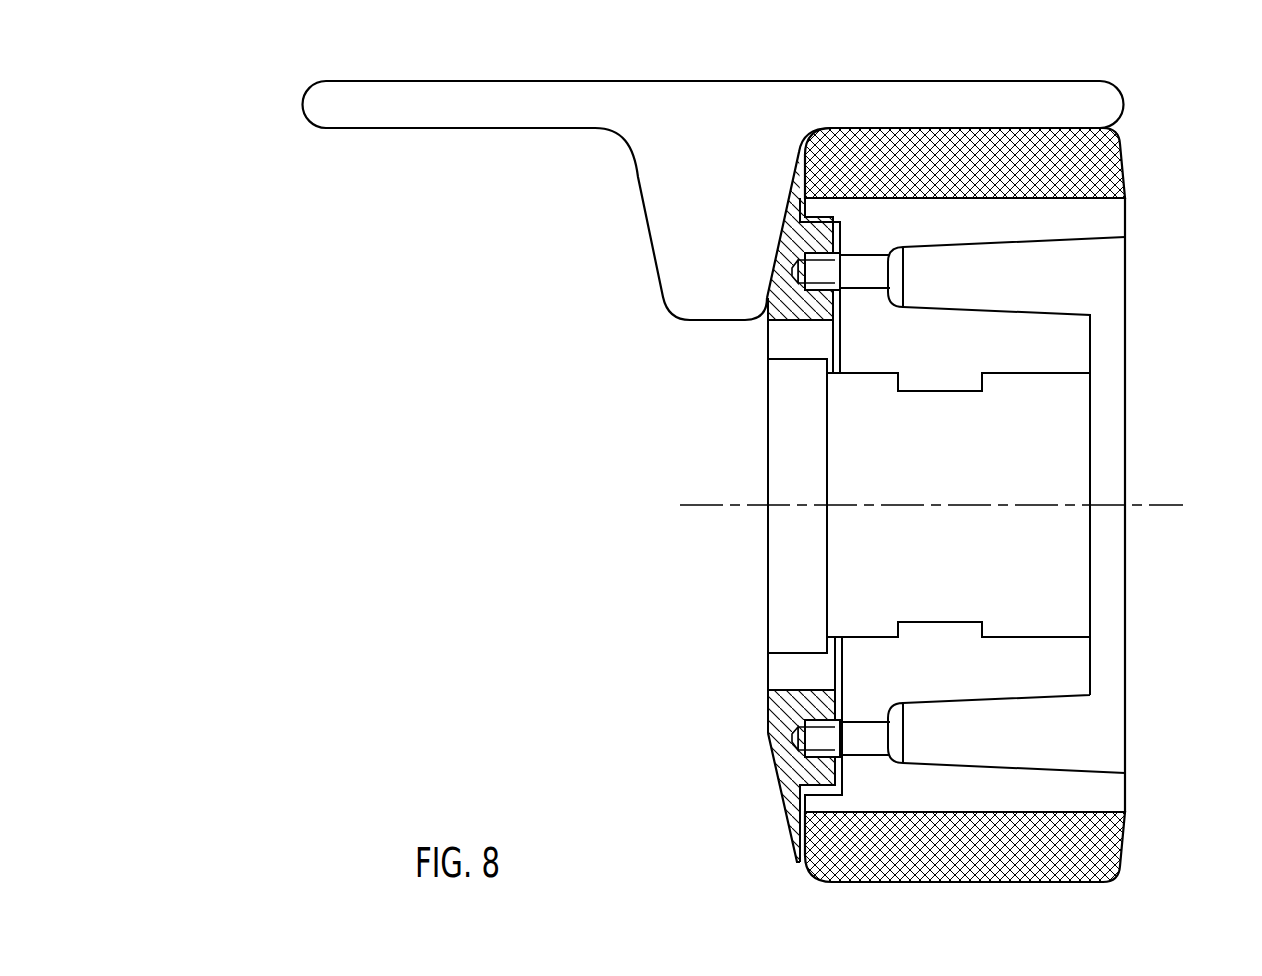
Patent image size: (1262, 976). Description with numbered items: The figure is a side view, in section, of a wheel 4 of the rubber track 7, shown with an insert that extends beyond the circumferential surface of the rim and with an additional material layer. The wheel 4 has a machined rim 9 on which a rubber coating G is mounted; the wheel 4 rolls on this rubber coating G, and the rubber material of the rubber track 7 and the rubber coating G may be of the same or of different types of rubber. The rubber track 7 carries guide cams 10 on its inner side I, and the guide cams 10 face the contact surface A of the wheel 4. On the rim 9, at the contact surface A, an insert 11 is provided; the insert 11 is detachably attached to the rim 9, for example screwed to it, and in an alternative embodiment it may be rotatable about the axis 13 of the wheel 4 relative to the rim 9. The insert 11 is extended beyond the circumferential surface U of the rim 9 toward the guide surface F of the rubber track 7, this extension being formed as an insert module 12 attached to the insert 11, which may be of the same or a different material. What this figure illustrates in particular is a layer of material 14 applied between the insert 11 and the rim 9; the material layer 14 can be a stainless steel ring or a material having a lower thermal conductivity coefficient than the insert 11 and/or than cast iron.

The wheel 4 is at (1160, 281).
The rubber track 7 is at (1113, 101).
The rim 9 is at (1077, 343).
The guide cam 10 is at (653, 167).
The insert 11 is at (795, 313).
The insert module 12 is at (790, 830).
The axis 13 is at (950, 506).
The material layer 14 is at (838, 232).
The contact surface A is at (777, 310).
The guide surface F is at (930, 128).
The rubber coating G is at (1118, 157).
The inner side I is at (425, 128).
The circumferential surface U is at (970, 815).